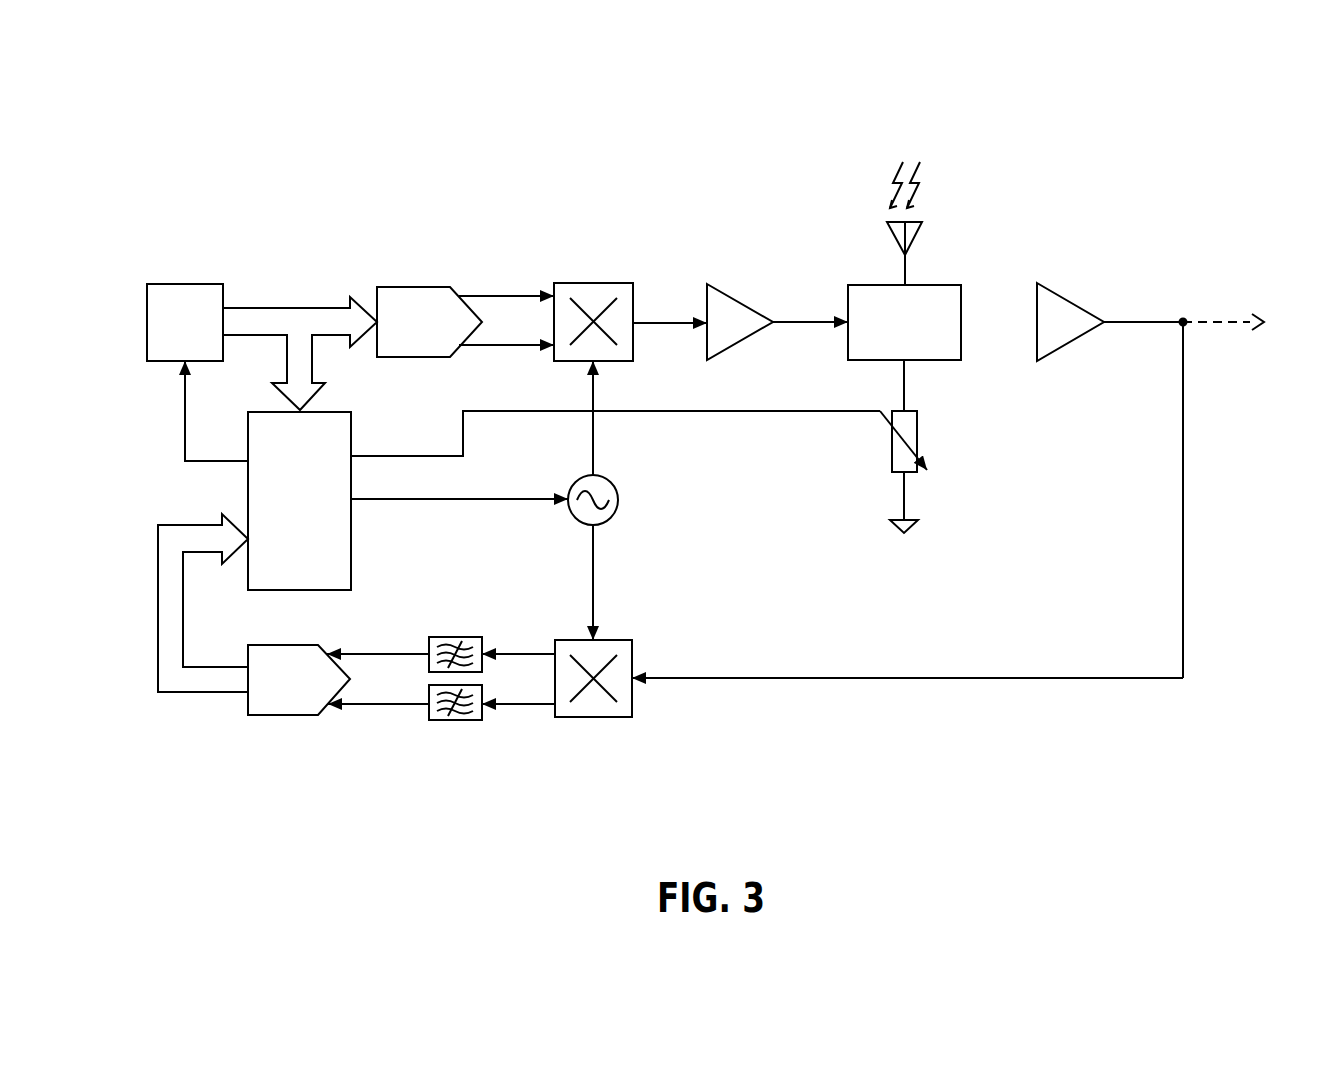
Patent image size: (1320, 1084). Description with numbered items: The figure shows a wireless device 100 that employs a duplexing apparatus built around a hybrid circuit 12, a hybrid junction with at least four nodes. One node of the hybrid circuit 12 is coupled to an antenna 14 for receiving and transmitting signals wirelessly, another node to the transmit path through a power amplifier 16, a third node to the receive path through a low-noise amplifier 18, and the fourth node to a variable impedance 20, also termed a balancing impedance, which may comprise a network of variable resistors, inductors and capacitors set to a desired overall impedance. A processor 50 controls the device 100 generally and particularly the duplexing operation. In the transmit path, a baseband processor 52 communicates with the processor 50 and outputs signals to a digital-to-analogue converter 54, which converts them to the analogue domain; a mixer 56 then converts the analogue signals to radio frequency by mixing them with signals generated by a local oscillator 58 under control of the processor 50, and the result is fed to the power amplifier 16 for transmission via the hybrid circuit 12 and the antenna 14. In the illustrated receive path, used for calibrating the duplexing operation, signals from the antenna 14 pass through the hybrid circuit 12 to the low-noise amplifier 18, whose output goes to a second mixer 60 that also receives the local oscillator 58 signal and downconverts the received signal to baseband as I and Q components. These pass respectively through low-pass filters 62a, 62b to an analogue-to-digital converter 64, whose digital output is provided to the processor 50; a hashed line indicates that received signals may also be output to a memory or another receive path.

The wireless device 100 is at (1202, 201).
The hybrid circuit 12 is at (940, 285).
The antenna 14 is at (889, 240).
The power amplifier 16 is at (735, 300).
The low-noise amplifier 18 is at (1065, 296).
The variable impedance 20 is at (918, 436).
The processor 50 is at (351, 546).
The baseband processor 52 is at (180, 284).
The digital-to-analogue converter 54 is at (410, 287).
The mixer 56 is at (592, 283).
The local oscillator 58 is at (618, 501).
The second mixer 60 is at (590, 717).
The low-pass filter 62a is at (452, 637).
The low-pass filter 62b is at (455, 720).
The analogue-to-digital converter 64 is at (283, 716).